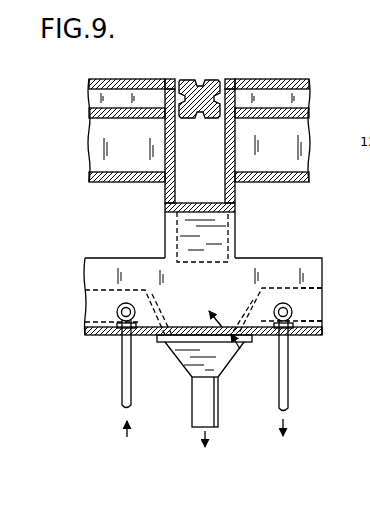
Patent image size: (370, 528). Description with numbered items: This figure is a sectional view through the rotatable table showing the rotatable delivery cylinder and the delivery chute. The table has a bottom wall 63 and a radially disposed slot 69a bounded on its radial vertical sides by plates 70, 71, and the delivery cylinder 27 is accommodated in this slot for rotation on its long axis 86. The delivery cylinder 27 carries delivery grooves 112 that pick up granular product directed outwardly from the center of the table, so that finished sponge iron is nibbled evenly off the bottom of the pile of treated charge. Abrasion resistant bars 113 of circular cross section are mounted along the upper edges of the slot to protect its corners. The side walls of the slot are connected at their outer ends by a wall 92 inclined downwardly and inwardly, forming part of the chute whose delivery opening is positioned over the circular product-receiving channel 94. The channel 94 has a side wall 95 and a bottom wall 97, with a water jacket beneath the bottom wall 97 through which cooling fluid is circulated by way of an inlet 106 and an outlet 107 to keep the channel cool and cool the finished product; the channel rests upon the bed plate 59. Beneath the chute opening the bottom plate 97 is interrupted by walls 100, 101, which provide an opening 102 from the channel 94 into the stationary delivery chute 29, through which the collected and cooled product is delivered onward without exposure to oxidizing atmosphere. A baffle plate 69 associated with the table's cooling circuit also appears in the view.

The circular product-receiving channel 94 is at (84, 117).
The abrasion resistant bars 113 is at (168, 80).
The delivery cylinder 27 is at (183, 80).
The delivery grooves 112 is at (200, 79).
The long axis 86 is at (197, 117).
The baffle plate 69 is at (129, 118).
The bottom wall 63 is at (131, 183).
The plate 70 is at (225, 164).
The plate 71 is at (176, 185).
The radially disposed slot 69a is at (213, 187).
The wall 92 is at (177, 235).
The side wall 95 is at (289, 263).
The bottom wall 97 is at (313, 287).
The wall 101 is at (158, 310).
The wall 100 is at (250, 310).
The bed plate 59 is at (95, 335).
The inlet 106 is at (122, 397).
The outlet 107 is at (288, 396).
The opening 102 is at (228, 336).
The stationary delivery chute 29 is at (198, 408).